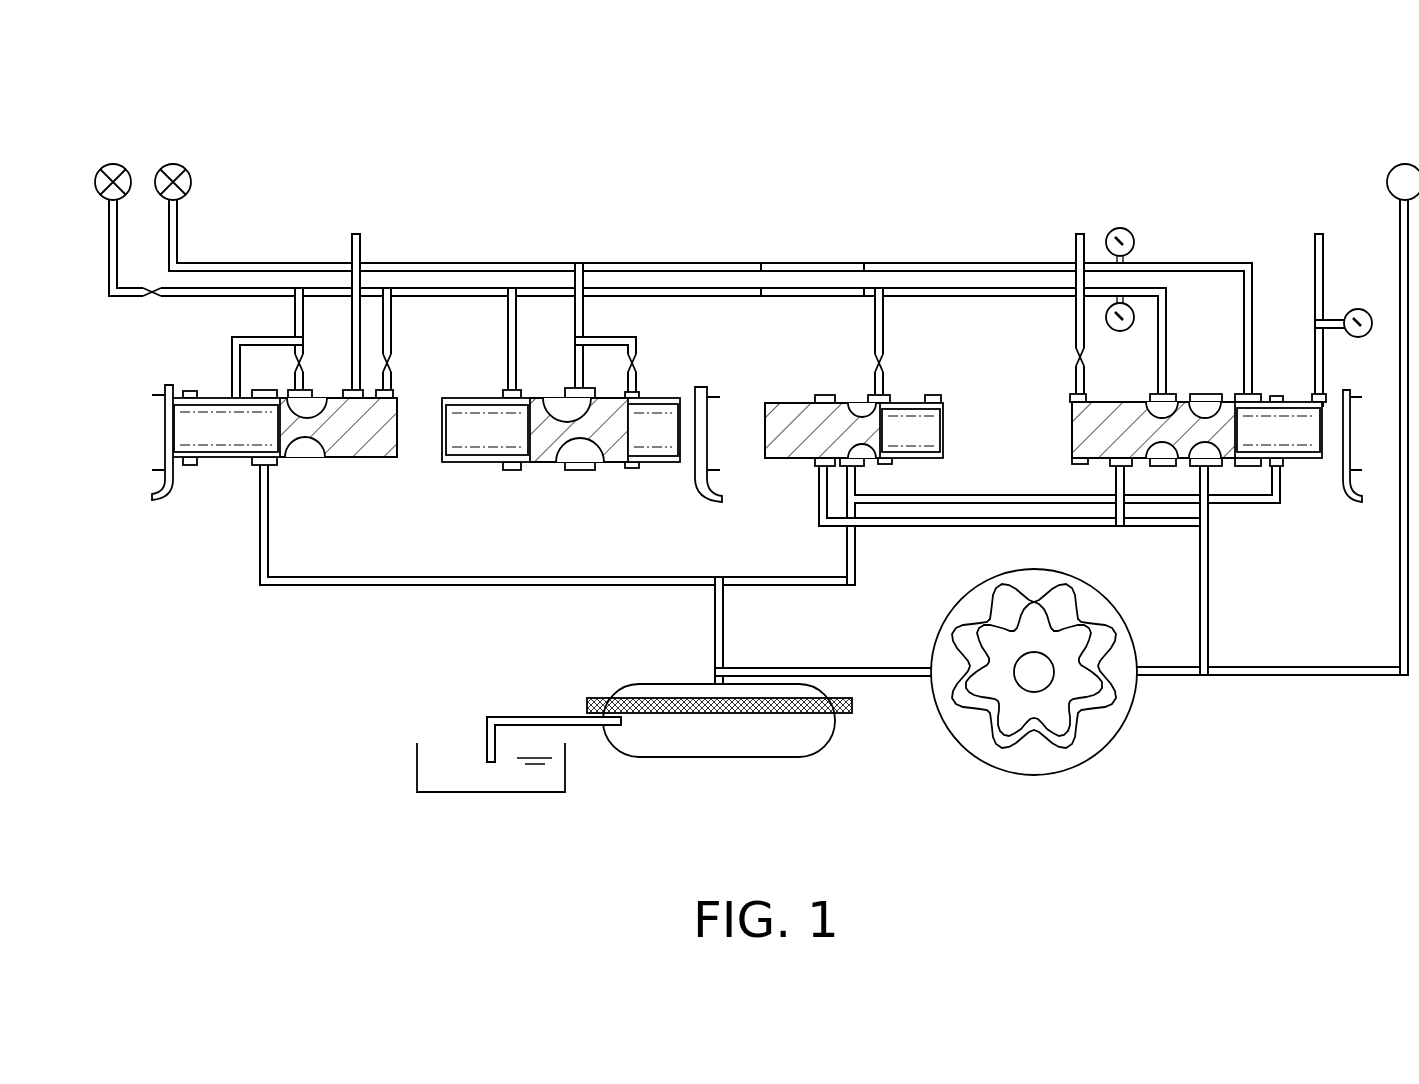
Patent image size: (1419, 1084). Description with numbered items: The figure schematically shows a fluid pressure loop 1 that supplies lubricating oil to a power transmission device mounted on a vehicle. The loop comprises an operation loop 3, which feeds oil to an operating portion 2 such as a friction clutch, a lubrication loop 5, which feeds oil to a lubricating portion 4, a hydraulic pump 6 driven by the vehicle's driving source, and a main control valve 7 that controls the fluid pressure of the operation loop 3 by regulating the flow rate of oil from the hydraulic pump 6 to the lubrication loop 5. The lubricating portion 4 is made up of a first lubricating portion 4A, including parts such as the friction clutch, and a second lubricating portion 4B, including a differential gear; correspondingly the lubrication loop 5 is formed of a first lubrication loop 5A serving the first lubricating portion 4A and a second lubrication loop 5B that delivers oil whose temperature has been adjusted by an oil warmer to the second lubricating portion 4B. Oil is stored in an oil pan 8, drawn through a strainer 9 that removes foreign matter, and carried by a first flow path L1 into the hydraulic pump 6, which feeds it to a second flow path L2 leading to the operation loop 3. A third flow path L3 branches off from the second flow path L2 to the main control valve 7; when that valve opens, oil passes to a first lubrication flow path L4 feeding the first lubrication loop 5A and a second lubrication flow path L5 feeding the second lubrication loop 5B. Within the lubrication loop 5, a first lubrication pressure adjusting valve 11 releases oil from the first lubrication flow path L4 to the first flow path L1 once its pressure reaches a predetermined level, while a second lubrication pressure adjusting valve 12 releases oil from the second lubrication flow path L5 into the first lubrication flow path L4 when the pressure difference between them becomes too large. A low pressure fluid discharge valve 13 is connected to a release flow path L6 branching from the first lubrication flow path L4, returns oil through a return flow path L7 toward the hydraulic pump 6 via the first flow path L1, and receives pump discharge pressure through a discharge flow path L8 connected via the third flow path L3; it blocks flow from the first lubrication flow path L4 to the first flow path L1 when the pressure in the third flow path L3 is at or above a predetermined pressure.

The fluid pressure loop 1 is at (498, 102).
The operating portion 2 is at (1405, 163).
The operation loop 3 is at (1400, 560).
The lubricating portion 4 is at (98, 108).
The first lubricating portion 4A is at (113, 163).
The second lubricating portion 4B is at (173, 163).
The lubrication loop 5 is at (858, 183).
The first lubrication loop 5A is at (800, 284).
The second lubrication loop 5B is at (842, 256).
The hydraulic pump 6 is at (1125, 722).
The main control valve 7 is at (1200, 386).
The oil pan 8 is at (523, 794).
The strainer 9 is at (750, 758).
The first lubrication pressure adjusting valve 11 is at (190, 386).
The second lubrication pressure adjusting valve 12 is at (478, 390).
The low pressure fluid discharge valve 13 is at (908, 396).
The first flow path L1 is at (886, 678).
The second flow path L2 is at (1333, 677).
The third flow path L3 is at (1208, 565).
The first lubrication flow path L4 is at (733, 286).
The second lubrication flow path L5 is at (948, 262).
The release flow path L6 is at (875, 333).
The return flow path L7 is at (858, 477).
The discharge flow path L8 is at (817, 478).